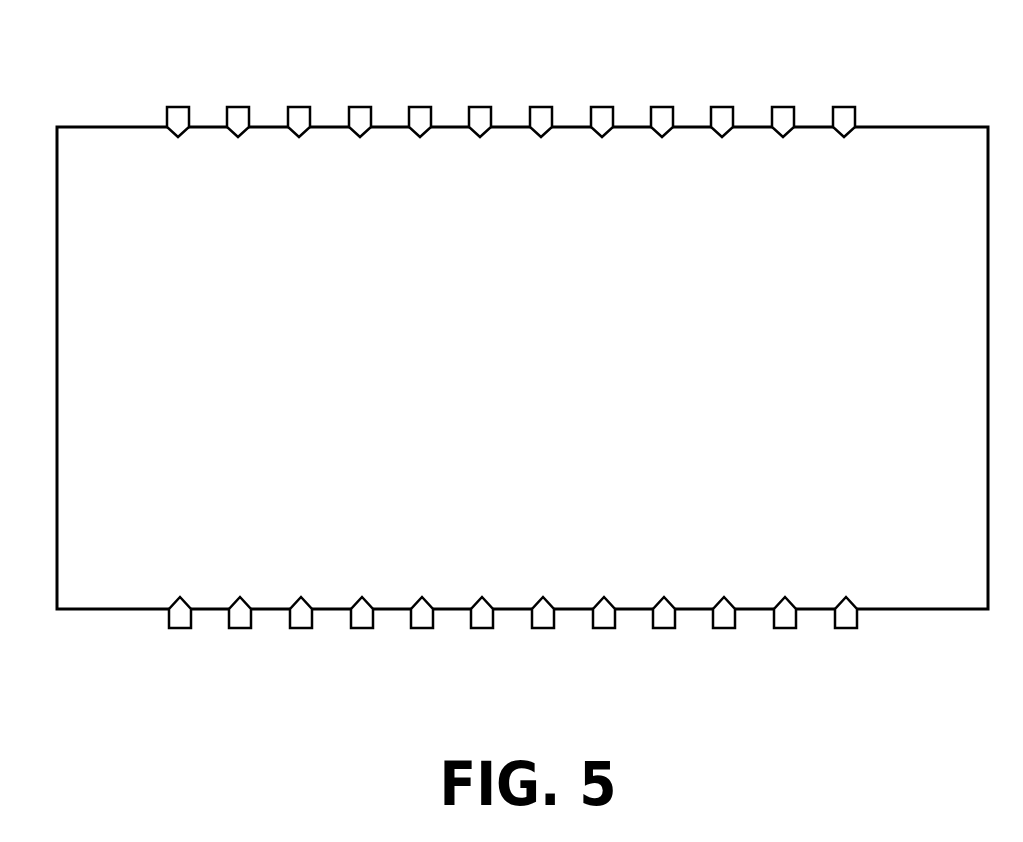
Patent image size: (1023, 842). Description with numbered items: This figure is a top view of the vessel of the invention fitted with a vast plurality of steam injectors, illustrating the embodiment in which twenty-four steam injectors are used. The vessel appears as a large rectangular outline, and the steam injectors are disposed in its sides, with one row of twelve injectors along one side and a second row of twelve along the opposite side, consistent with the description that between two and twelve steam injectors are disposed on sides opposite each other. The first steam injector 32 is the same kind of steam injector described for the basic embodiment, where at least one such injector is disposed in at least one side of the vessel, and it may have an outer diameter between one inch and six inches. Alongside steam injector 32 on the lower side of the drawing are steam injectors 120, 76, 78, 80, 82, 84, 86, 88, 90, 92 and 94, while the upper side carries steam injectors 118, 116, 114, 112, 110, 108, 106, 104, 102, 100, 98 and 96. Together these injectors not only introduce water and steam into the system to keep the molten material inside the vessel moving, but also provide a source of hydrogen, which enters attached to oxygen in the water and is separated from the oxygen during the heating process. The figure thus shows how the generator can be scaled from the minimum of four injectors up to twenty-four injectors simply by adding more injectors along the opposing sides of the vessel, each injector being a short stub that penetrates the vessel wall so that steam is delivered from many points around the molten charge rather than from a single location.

The steam injector 32 is at (180, 628).
The steam injector 76 is at (301, 628).
The steam injector 78 is at (362, 628).
The steam injector 80 is at (422, 628).
The steam injector 82 is at (482, 628).
The steam injector 84 is at (543, 628).
The steam injector 86 is at (604, 628).
The steam injector 88 is at (664, 628).
The steam injector 90 is at (724, 628).
The steam injector 92 is at (785, 628).
The steam injector 94 is at (846, 628).
The steam injector 96 is at (844, 107).
The steam injector 98 is at (783, 107).
The steam injector 100 is at (722, 107).
The steam injector 102 is at (662, 107).
The steam injector 104 is at (602, 107).
The steam injector 106 is at (541, 107).
The steam injector 108 is at (480, 107).
The steam injector 110 is at (420, 107).
The steam injector 112 is at (360, 107).
The steam injector 114 is at (299, 107).
The steam injector 116 is at (238, 107).
The steam injector 118 is at (178, 107).
The steam injector 120 is at (240, 628).